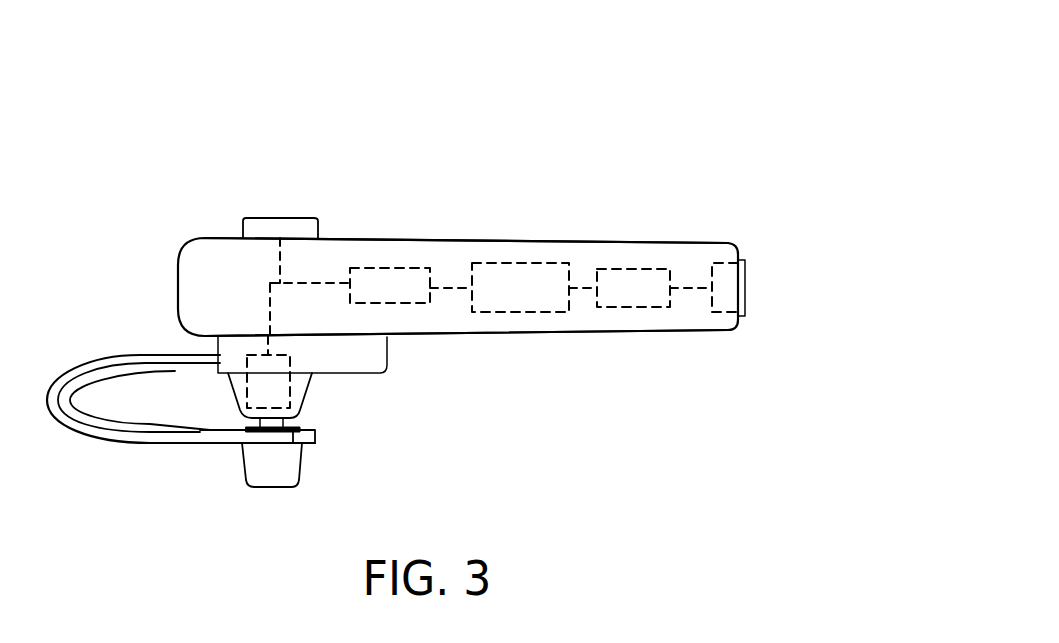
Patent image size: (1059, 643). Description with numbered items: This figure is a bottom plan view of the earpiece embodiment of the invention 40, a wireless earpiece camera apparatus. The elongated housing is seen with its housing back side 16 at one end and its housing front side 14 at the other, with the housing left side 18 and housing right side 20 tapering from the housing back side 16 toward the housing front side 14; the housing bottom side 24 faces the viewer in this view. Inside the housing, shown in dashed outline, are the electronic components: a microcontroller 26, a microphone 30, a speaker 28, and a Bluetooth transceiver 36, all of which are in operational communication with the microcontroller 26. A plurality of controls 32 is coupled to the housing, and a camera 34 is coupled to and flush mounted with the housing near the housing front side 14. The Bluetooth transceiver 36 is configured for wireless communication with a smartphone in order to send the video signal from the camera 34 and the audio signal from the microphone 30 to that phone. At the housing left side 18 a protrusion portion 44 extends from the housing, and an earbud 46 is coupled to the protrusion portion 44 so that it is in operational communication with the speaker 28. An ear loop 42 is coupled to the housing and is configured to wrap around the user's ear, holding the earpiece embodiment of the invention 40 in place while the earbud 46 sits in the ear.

The earpiece embodiment of the invention 40 is at (667, 137).
The housing back side 16 is at (178, 288).
The housing bottom side 24 is at (215, 277).
The housing right side 20 is at (496, 241).
The housing left side 18 is at (469, 334).
The plurality of controls 32 is at (281, 218).
The microphone 30 is at (381, 285).
The Bluetooth transceiver 36 is at (517, 300).
The microcontroller 26 is at (634, 300).
The housing front side 14 is at (742, 302).
The camera 34 is at (746, 290).
The speaker 28 is at (284, 395).
The ear loop 42 is at (103, 430).
The protrusion portion 44 is at (224, 363).
The earbud 46 is at (272, 468).